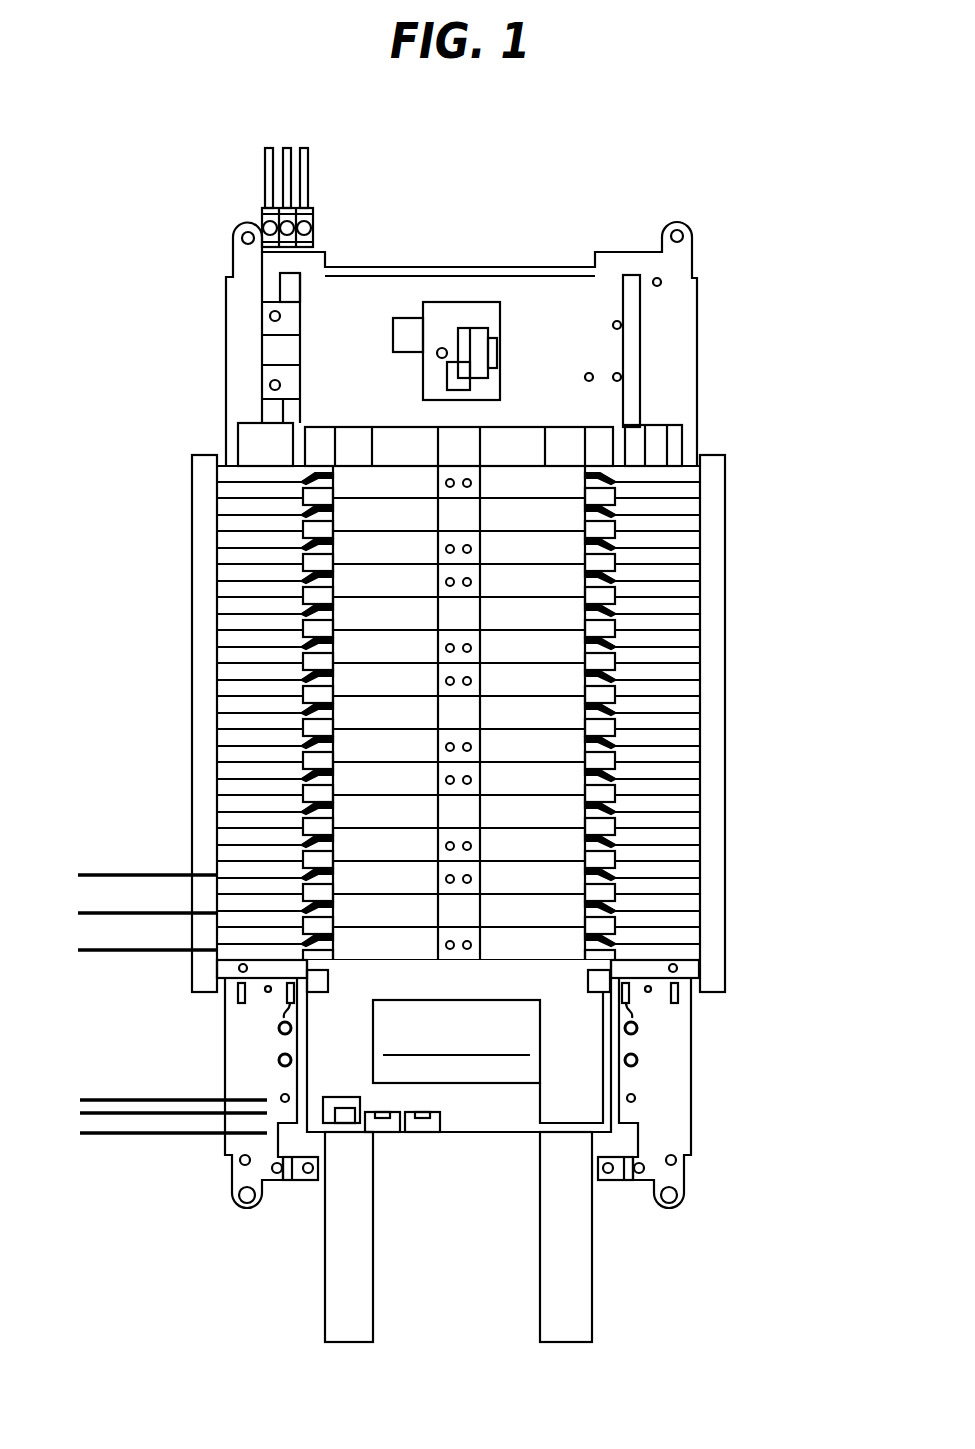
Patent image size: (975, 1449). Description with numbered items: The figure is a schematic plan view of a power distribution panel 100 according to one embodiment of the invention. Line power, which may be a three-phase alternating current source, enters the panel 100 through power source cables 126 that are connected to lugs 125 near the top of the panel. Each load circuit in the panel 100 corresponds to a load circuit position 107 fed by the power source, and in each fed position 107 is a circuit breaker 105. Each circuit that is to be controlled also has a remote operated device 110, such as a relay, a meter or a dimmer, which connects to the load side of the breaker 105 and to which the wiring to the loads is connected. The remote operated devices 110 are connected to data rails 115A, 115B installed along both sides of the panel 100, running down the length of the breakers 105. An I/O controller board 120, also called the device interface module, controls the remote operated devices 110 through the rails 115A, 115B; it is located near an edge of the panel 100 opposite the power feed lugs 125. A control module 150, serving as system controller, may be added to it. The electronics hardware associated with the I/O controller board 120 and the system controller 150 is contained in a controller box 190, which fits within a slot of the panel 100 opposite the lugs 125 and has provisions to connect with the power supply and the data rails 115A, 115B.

The panel 100 is at (540, 205).
The circuit breaker 105 is at (555, 580).
The load circuit position 107 is at (815, 578).
The remote operated device 110 is at (673, 575).
The data rail 115A is at (727, 777).
The data rail 115B is at (190, 618).
The I/O controller board 120 is at (480, 1048).
The lugs 125 is at (317, 225).
The power source cables 126 is at (322, 135).
The control module 150 is at (487, 1067).
The controller box 190 is at (500, 1135).